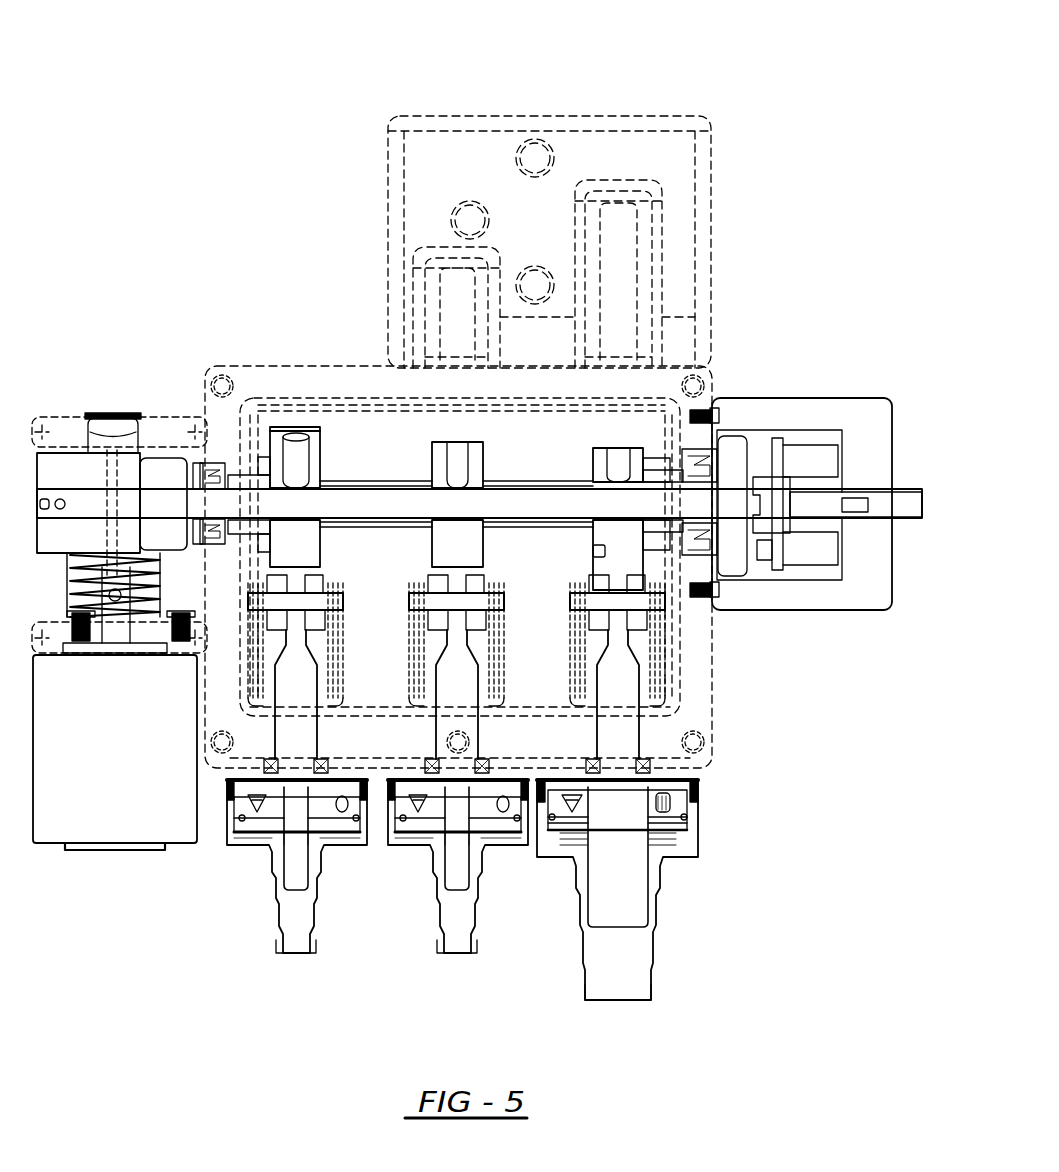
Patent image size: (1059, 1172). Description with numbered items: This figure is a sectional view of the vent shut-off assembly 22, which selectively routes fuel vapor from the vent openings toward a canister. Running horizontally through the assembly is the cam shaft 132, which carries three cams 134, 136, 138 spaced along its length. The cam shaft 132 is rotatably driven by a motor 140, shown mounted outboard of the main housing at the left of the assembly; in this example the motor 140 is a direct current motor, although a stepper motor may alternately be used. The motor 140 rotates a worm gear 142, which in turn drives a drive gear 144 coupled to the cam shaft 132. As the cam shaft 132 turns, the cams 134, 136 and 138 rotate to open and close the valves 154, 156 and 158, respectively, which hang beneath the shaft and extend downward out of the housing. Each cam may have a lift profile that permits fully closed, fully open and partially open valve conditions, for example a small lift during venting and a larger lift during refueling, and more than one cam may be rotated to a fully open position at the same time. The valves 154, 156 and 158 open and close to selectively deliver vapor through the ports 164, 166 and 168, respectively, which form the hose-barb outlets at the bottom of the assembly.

The vent shut-off assembly 22 is at (838, 132).
The cam shaft 132 is at (498, 497).
The cam 134 is at (622, 537).
The cam 136 is at (453, 528).
The cam 138 is at (300, 533).
The motor 140 is at (100, 823).
The worm gear 142 is at (117, 593).
The drive gear 144 is at (116, 418).
The valve 154 is at (620, 742).
The valve 156 is at (457, 787).
The valve 158 is at (295, 787).
The port 164 is at (648, 953).
The port 166 is at (470, 905).
The port 168 is at (278, 910).